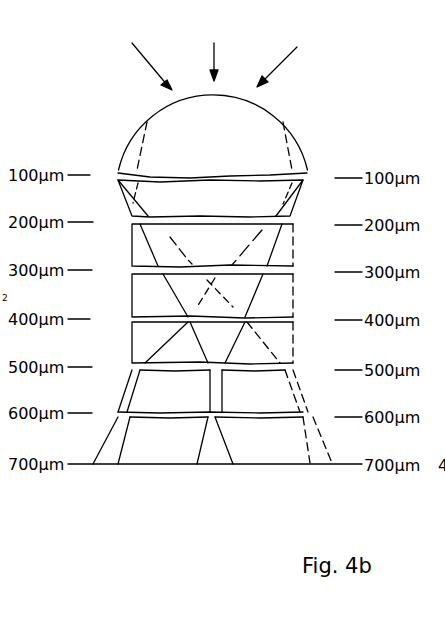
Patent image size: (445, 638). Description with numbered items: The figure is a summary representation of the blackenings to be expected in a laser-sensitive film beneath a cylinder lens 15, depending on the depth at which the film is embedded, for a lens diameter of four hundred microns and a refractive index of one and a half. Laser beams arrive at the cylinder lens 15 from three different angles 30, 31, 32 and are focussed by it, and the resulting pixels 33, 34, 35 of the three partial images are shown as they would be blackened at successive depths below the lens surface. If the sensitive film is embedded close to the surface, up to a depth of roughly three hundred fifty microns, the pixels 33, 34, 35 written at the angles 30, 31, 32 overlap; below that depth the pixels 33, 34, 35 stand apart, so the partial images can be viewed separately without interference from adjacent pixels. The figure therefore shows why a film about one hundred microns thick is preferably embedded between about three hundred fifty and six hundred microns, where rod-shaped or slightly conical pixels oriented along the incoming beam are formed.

The cylinder lens 15 is at (280, 118).
The angle 30 is at (223, 62).
The angle 31 is at (288, 66).
The angle 32 is at (152, 66).
The pixel 33 is at (113, 454).
The pixel 34 is at (220, 454).
The pixel 35 is at (319, 454).